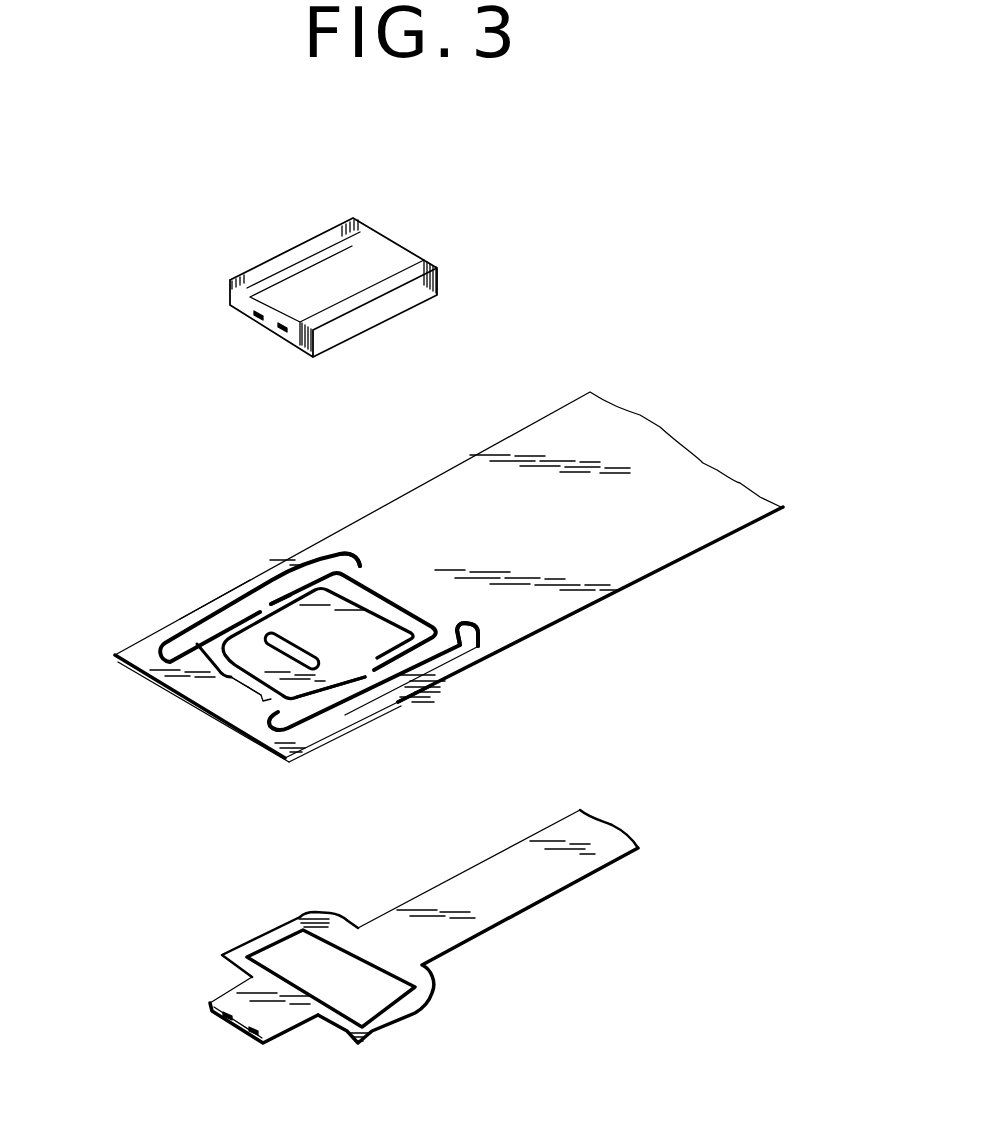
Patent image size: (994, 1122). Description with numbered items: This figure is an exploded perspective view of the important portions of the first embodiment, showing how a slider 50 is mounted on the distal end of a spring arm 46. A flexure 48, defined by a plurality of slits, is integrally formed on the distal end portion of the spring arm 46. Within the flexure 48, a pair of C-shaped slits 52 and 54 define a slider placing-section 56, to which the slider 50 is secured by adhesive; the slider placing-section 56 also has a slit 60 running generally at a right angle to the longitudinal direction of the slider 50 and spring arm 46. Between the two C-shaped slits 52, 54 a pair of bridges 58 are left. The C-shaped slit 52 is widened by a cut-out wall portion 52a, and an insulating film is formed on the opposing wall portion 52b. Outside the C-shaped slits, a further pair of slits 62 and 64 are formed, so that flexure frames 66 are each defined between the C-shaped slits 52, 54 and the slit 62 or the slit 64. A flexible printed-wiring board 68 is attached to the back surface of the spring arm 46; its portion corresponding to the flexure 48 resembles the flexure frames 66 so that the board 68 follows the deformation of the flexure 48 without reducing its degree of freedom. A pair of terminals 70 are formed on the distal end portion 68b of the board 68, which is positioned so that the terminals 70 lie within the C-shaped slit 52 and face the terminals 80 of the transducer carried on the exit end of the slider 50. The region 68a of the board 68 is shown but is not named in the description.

The spring arm 46 is at (633, 437).
The flexure 48 is at (210, 595).
The slider 50 is at (393, 244).
The C-shaped slit 52 is at (260, 698).
The cut-out wall portion 52a is at (237, 673).
The opposing wall portion 52b is at (243, 677).
The C-shaped slit 54 is at (393, 597).
The slider placing-section 56 is at (338, 648).
The bridges 58 is at (258, 603).
The slit 60 is at (272, 645).
The slit 62 is at (320, 557).
The slit 64 is at (474, 645).
The flexure frames 66 is at (277, 590).
The flexible printed-wiring board 68 is at (500, 900).
The opening of connecting member 68a is at (392, 1017).
The distal end portion 68b is at (213, 1005).
The terminals 70 is at (253, 1030).
The terminals 80 is at (277, 331).